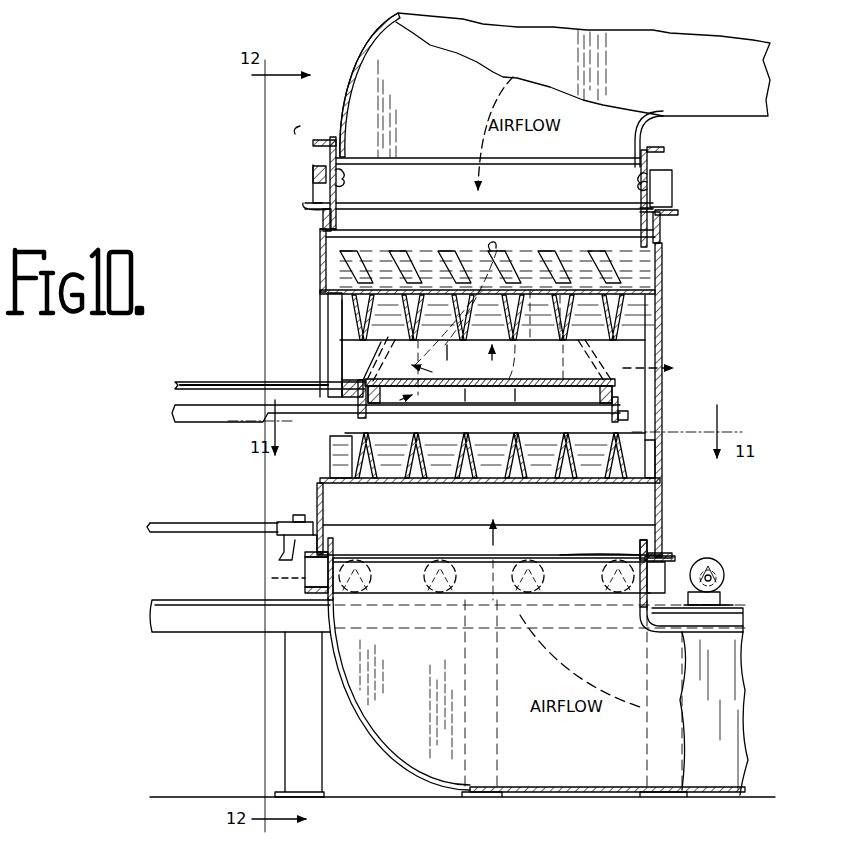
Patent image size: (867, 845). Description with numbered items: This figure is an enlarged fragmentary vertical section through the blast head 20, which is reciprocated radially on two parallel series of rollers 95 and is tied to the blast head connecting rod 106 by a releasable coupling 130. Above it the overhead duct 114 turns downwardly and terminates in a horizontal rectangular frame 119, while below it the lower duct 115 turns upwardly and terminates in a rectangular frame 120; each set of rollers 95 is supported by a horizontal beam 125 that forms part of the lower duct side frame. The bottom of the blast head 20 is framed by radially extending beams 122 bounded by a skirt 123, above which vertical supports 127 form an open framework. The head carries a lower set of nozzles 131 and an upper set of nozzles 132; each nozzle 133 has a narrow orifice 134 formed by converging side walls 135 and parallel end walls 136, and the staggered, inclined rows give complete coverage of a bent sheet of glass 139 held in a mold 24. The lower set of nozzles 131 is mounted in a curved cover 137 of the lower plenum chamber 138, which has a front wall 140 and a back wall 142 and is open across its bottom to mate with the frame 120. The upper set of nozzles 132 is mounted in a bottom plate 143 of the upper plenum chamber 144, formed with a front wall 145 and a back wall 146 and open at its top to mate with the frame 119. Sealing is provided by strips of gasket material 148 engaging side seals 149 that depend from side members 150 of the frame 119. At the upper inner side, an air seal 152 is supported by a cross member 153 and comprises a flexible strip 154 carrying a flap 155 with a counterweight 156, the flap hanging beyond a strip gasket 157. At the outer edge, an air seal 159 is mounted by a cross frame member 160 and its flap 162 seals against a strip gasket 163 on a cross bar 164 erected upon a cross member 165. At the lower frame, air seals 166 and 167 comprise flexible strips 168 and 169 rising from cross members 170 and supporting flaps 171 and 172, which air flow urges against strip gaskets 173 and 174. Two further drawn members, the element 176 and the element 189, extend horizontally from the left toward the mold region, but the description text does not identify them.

The blast head 20 is at (676, 331).
The mold 24 is at (355, 355).
The rollers 95 is at (272, 579).
The blast head connecting rod 106 is at (172, 529).
The overhead duct 114 is at (700, 120).
The lower duct 115 is at (645, 798).
The horizontal rectangular frame 119 is at (664, 167).
The horizontal rectangular frame 120 is at (722, 569).
The radially extending beams 122 is at (655, 602).
The skirt 123 is at (668, 556).
The horizontal beam 125 is at (257, 633).
The vertical supports 127 is at (320, 340).
The releasable couplings 130 is at (294, 519).
The lower set of nozzles 131 is at (328, 465).
The upper set of nozzles 132 is at (348, 321).
The nozzles 133 is at (630, 328).
The orifice 134 is at (364, 430).
The converging side walls 135 is at (366, 486).
The parallel end walls 136 is at (452, 345).
The curved cover 137 is at (637, 490).
The lower plenum chamber 138 is at (561, 516).
The sheet of glass 139 is at (612, 368).
The front wall 140 is at (318, 496).
The back wall 142 is at (663, 509).
The bottom plate 143 is at (330, 298).
The upper plenum chamber 144 is at (622, 251).
The front wall 145 is at (322, 236).
The back wall 146 is at (664, 262).
The strips of gasket material 148 is at (582, 209).
The side seals 149 is at (673, 184).
The side members 150 is at (555, 165).
The air seal 152 is at (348, 180).
The cross member 153 is at (338, 165).
The flexible strip 154 is at (333, 160).
The flap 155 is at (334, 211).
The counterweight 156 is at (313, 179).
The strip gasket 157 is at (310, 206).
The air seal 159 is at (655, 198).
The cross frame member 160 is at (637, 165).
The flap 162 is at (642, 176).
The strip gasket 163 is at (648, 213).
The cross bar 164 is at (673, 212).
The cross member 165 is at (662, 222).
The air seal 166 is at (336, 548).
The air seal 167 is at (637, 549).
The flexible strip 168 is at (342, 600).
The flexible strip 169 is at (642, 606).
The cross members 170 is at (310, 589).
The flap 171 is at (368, 566).
The flap 172 is at (608, 566).
The strip gasket 173 is at (305, 569).
The strip gasket 174 is at (642, 556).
The shaft 176 is at (212, 424).
The rod 189 is at (226, 382).